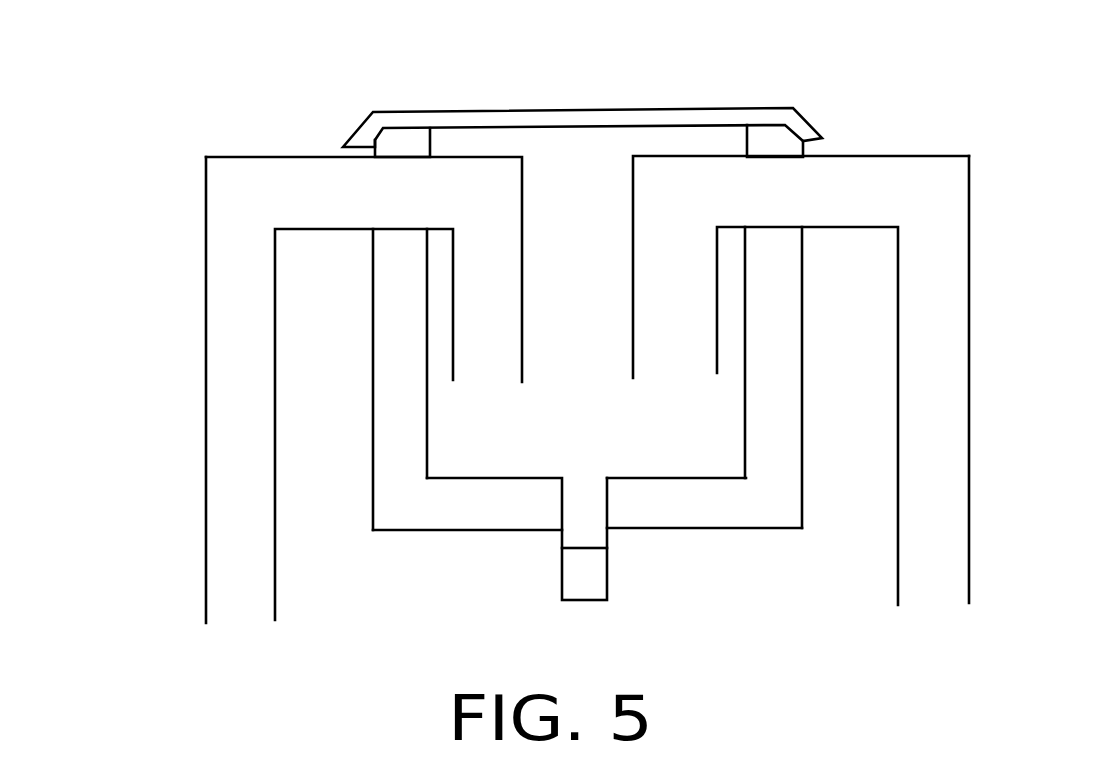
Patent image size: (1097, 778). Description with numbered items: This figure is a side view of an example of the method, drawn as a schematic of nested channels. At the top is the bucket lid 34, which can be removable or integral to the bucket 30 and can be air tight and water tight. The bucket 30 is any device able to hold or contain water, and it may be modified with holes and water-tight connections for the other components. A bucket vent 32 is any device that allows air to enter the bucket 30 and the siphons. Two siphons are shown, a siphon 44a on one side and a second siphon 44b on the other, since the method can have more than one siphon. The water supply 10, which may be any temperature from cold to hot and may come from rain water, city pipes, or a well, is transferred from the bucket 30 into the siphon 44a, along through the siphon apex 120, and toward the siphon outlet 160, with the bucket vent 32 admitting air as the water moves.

The water supply 10 is at (584, 539).
The bucket 30 is at (588, 327).
The bucket vent 32 is at (801, 403).
The bucket lid 34 is at (577, 118).
The siphon 44a is at (232, 515).
The second siphon 44b is at (947, 513).
The siphon apex 120 is at (364, 397).
The siphon outlet 160 is at (364, 414).